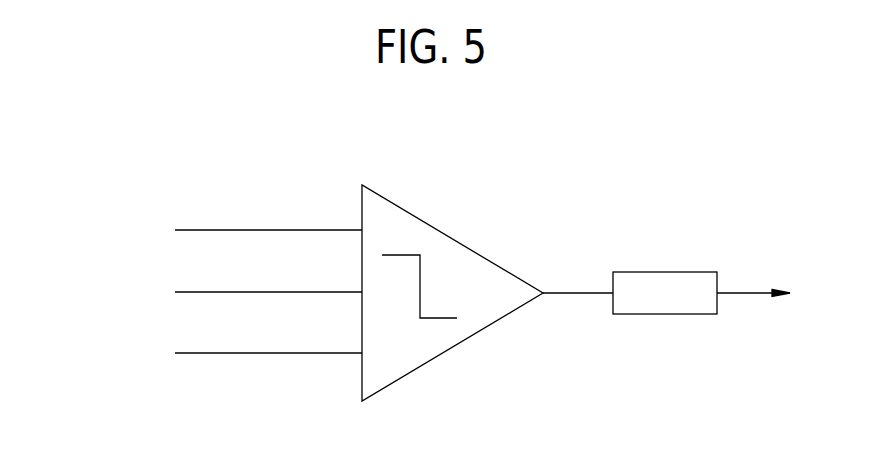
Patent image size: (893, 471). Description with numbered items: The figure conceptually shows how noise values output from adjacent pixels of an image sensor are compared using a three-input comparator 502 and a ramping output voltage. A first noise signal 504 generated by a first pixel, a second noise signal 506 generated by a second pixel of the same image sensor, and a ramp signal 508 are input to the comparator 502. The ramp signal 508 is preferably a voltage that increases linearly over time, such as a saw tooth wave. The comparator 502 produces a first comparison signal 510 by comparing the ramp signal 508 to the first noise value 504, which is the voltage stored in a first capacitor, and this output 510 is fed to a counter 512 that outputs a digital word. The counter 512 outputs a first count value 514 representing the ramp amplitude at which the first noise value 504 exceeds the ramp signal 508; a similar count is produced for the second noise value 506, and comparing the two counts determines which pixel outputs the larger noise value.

The three-input comparator 502 is at (437, 229).
The first noise signal 504 is at (255, 230).
The second noise signal 506 is at (210, 292).
The ramp signal 508 is at (262, 353).
The first comparison signal 510 is at (562, 293).
The counter 512 is at (667, 272).
The first count value 514 is at (737, 293).